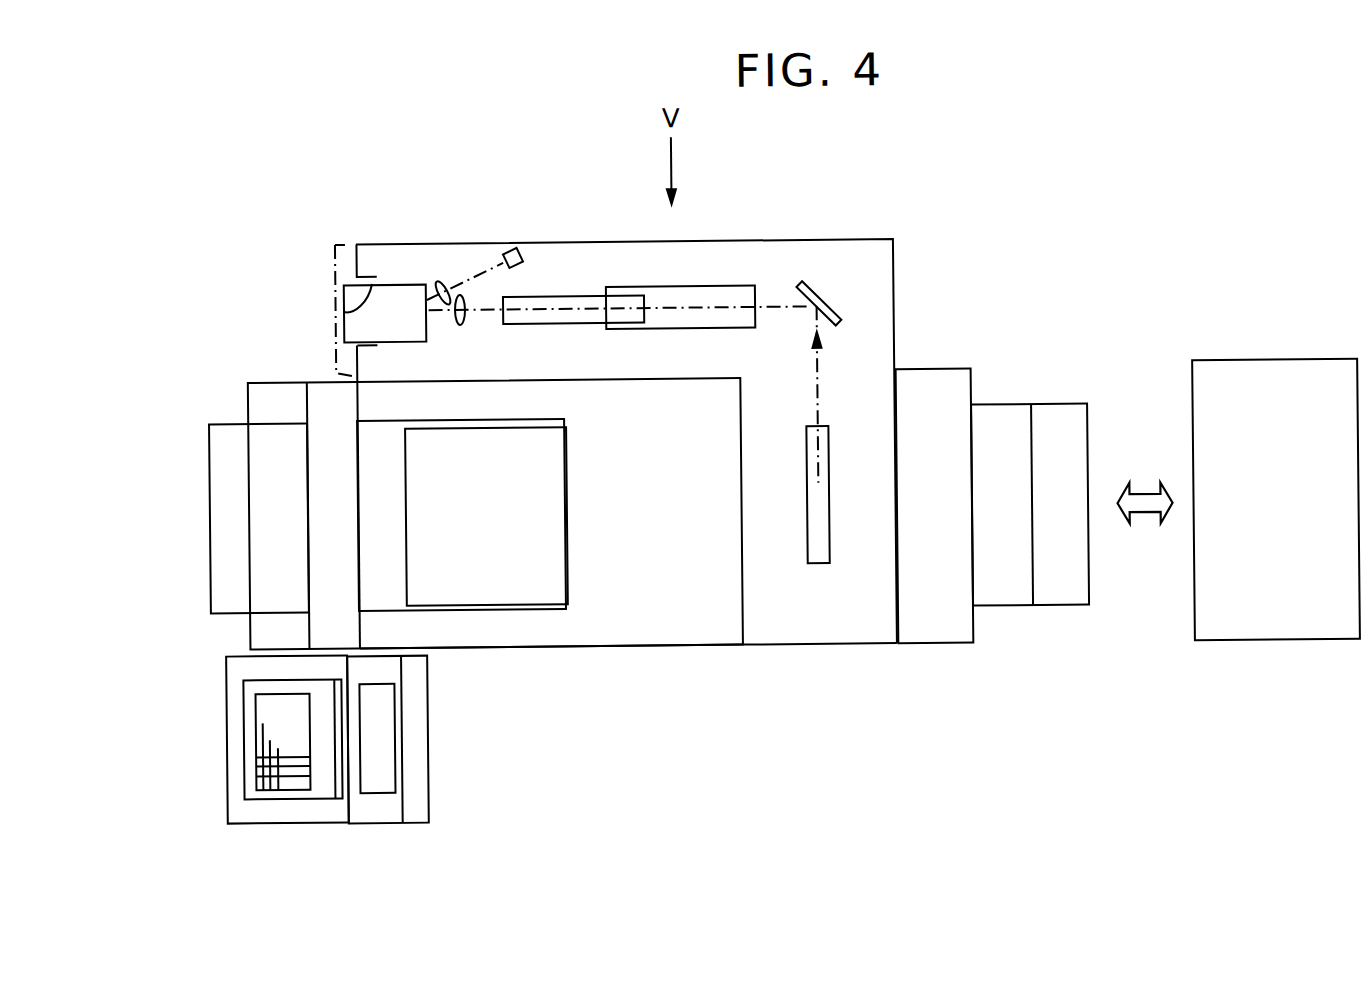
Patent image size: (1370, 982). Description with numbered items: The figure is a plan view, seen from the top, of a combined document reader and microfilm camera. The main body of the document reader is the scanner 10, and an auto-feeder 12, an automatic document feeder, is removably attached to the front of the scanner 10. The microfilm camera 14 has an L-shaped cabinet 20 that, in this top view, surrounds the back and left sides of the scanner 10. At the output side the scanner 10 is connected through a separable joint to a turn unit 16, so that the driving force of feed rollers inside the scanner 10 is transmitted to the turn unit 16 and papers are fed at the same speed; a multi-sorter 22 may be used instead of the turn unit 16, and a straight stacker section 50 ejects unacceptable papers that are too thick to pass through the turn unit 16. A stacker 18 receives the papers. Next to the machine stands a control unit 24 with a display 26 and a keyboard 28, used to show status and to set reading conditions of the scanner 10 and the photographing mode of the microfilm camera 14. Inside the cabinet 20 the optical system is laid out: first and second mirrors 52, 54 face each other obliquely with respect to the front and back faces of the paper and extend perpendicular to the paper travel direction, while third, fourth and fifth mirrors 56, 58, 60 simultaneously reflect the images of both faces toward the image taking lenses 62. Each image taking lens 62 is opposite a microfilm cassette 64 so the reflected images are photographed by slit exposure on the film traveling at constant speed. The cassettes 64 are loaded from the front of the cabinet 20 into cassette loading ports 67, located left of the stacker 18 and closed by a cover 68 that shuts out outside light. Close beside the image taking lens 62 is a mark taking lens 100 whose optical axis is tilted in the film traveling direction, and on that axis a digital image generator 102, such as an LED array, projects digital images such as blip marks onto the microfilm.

The scanner 10 is at (641, 645).
The auto-feeder 12 is at (241, 389).
The microfilm camera 14 is at (838, 658).
The turn unit 16 is at (943, 646).
The stacker 18 is at (507, 577).
The cabinet 20 is at (896, 253).
The multi-sorter 22 is at (1258, 646).
The control unit 24 is at (390, 768).
The display 26 is at (386, 821).
The keyboard 28 is at (324, 820).
The straight stacker section 50 is at (1011, 611).
The first mirror 52 is at (770, 590).
The second mirror 54 is at (807, 562).
The third mirror 56 is at (836, 310).
The fourth mirror 58 is at (759, 289).
The fifth mirror 60 is at (574, 295).
The image taking lens 62 is at (464, 322).
The microfilm cassette 64 is at (395, 281).
The cassette loading port 67 is at (345, 310).
The cover 68 is at (334, 255).
The mark taking lens 100 is at (442, 285).
The digital image generator 102 is at (522, 247).